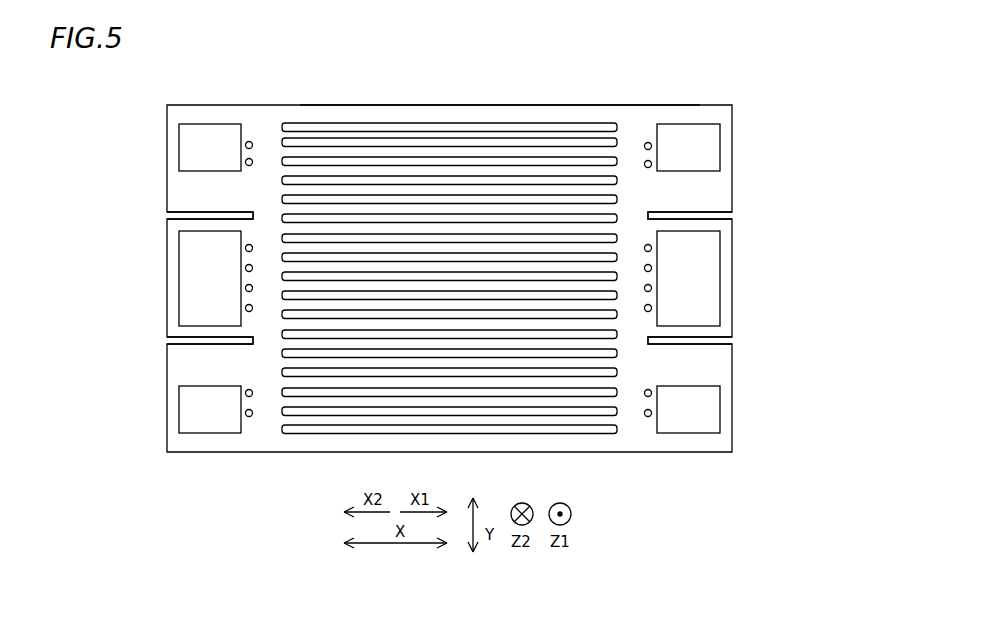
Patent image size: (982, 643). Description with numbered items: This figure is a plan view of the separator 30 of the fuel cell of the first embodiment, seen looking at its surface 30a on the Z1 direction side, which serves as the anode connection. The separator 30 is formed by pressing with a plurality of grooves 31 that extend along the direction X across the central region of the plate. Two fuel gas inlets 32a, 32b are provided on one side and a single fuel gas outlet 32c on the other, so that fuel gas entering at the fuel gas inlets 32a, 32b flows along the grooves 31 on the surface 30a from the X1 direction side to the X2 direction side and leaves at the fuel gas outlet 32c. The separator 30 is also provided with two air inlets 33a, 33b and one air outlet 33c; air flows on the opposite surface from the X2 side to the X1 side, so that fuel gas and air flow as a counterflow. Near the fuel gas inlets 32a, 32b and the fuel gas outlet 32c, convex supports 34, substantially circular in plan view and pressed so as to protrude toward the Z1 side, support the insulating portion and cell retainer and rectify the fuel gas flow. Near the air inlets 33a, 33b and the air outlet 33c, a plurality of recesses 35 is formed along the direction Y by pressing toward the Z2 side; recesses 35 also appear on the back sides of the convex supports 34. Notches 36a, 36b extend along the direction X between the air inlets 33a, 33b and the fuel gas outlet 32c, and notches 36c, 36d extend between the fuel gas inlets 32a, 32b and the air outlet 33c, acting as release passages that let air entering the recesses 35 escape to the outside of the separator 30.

The separator 30 is at (767, 86).
The surface of the separator on the Z1 direction side 30a is at (637, 104).
The grooves 31 is at (442, 140).
The fuel gas inlet 32a is at (712, 148).
The fuel gas inlet 32b is at (712, 411).
The fuel gas outlet 32c is at (190, 297).
The air inlet 33a is at (190, 150).
The air inlet 33b is at (190, 417).
The air outlet 33c is at (712, 290).
The convex supports 34 is at (651, 146).
The recesses 35 is at (246, 144).
The notch 36a is at (195, 213).
The notch 36b is at (190, 340).
The notch 36c is at (700, 217).
The notch 36d is at (700, 340).